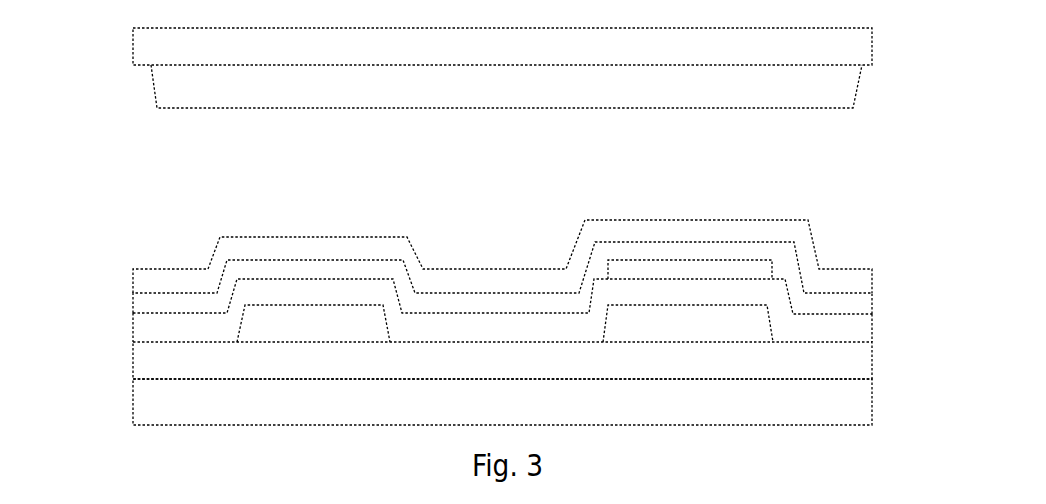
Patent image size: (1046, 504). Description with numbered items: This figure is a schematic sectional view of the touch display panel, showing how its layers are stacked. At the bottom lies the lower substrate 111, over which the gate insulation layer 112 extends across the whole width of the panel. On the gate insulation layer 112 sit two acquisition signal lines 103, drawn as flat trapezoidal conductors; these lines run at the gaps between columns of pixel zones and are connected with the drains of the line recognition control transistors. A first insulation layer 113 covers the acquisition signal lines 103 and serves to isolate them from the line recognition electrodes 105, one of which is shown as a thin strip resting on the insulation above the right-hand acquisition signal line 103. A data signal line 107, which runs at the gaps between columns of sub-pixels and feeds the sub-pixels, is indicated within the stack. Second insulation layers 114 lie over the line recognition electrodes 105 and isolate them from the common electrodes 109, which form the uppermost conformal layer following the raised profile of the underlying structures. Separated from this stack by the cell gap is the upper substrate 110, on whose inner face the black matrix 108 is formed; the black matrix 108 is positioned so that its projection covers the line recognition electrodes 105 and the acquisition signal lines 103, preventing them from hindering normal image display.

The acquisition signal line 103 is at (755, 328).
The line recognition electrode 105 is at (770, 268).
The data signal line 107 is at (253, 326).
The black matrix 108 is at (858, 83).
The common electrode 109 is at (819, 232).
The upper substrate 110 is at (872, 47).
The lower substrate 111 is at (872, 400).
The gate insulation layer 112 is at (872, 359).
The first insulation layer 113 is at (133, 332).
The second insulation layer 114 is at (133, 303).